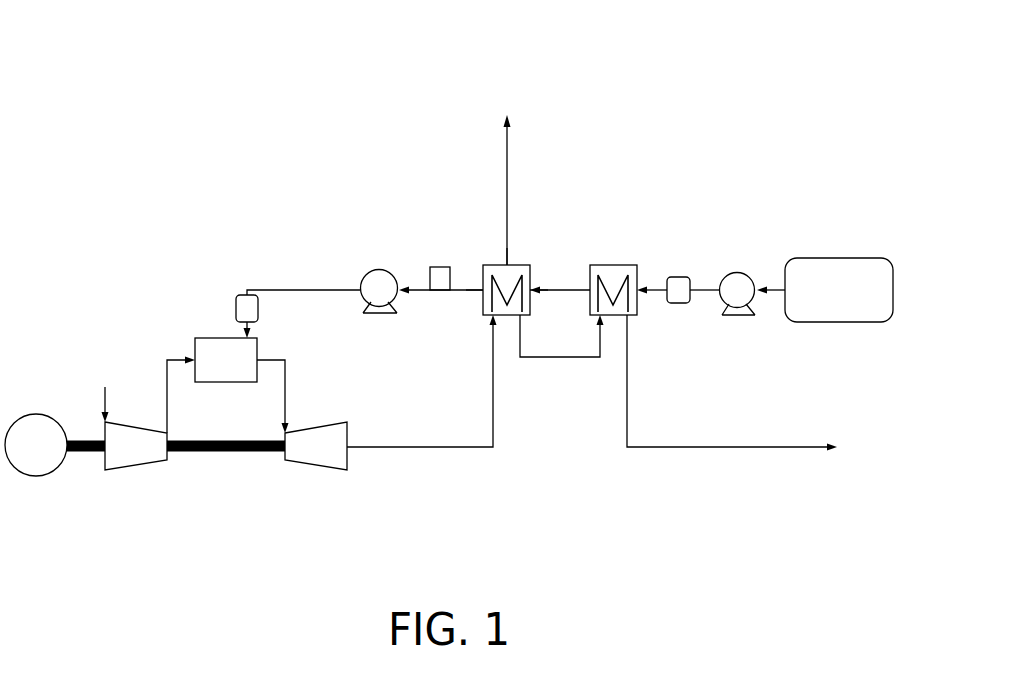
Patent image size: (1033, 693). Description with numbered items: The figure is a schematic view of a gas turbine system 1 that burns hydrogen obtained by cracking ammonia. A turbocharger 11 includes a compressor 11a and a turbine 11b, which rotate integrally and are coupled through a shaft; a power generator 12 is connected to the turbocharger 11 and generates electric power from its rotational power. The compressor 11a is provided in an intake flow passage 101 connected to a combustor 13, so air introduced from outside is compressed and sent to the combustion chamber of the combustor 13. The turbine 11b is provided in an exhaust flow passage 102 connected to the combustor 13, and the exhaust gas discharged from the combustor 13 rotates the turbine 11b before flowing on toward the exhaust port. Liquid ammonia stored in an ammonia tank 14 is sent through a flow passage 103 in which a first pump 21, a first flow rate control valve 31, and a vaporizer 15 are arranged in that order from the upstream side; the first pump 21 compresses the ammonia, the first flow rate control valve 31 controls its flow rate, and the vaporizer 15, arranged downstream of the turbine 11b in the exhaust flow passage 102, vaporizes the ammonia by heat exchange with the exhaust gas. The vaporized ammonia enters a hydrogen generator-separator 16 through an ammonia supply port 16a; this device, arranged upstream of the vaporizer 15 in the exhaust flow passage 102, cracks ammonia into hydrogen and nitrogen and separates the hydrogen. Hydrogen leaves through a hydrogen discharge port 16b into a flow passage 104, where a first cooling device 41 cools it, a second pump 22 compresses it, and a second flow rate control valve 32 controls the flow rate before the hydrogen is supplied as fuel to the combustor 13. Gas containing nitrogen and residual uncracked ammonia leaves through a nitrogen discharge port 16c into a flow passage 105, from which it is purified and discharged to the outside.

The gas turbine system 1 is at (58, 65).
The turbocharger 11 is at (196, 512).
The compressor 11a is at (138, 467).
The turbine 11b is at (315, 467).
The power generator 12 is at (38, 478).
The combustor 13 is at (227, 383).
The ammonia tank 14 is at (837, 257).
The vaporizer 15 is at (610, 263).
The hydrogen generator-separator 16 is at (515, 264).
The ammonia supply port 16a is at (537, 289).
The hydrogen discharge port 16b is at (474, 289).
The nitrogen discharge port 16c is at (505, 263).
The first pump 21 is at (735, 272).
The second pump 22 is at (377, 270).
The first flow rate control valve 31 is at (675, 272).
The second flow rate control valve 32 is at (235, 305).
The first cooling device 41 is at (440, 265).
The intake flow passage 101 is at (166, 373).
The exhaust flow passage 102 is at (285, 393).
The flow passage 103 is at (560, 293).
The flow passage 104 is at (257, 285).
The flow passage 105 is at (510, 158).